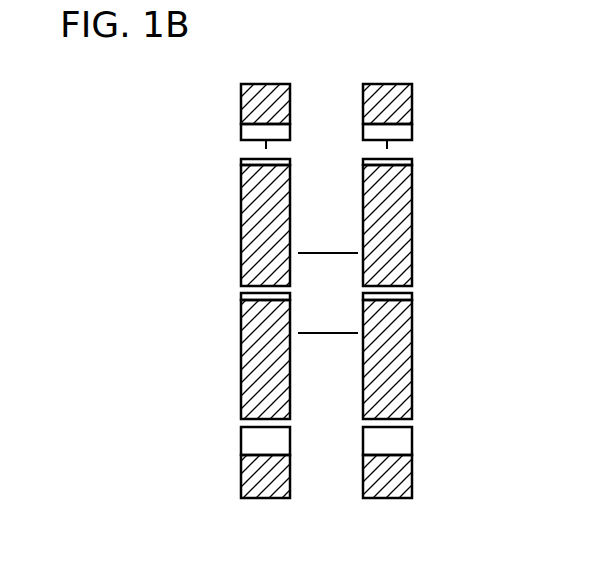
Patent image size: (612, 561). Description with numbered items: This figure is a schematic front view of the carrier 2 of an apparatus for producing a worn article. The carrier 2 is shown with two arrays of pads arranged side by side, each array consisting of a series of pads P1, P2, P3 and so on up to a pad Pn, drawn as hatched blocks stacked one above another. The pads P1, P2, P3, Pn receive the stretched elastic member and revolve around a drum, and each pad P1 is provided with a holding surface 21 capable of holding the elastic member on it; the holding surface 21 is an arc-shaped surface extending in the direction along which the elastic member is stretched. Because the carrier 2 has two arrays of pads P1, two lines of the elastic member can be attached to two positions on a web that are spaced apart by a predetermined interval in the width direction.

The carrier 2 is at (327, 93).
The holding surface 21 is at (248, 118).
The pad P1 is at (248, 378).
The pad P2 is at (248, 217).
The pad P3 is at (248, 97).
The pad Pn is at (243, 487).